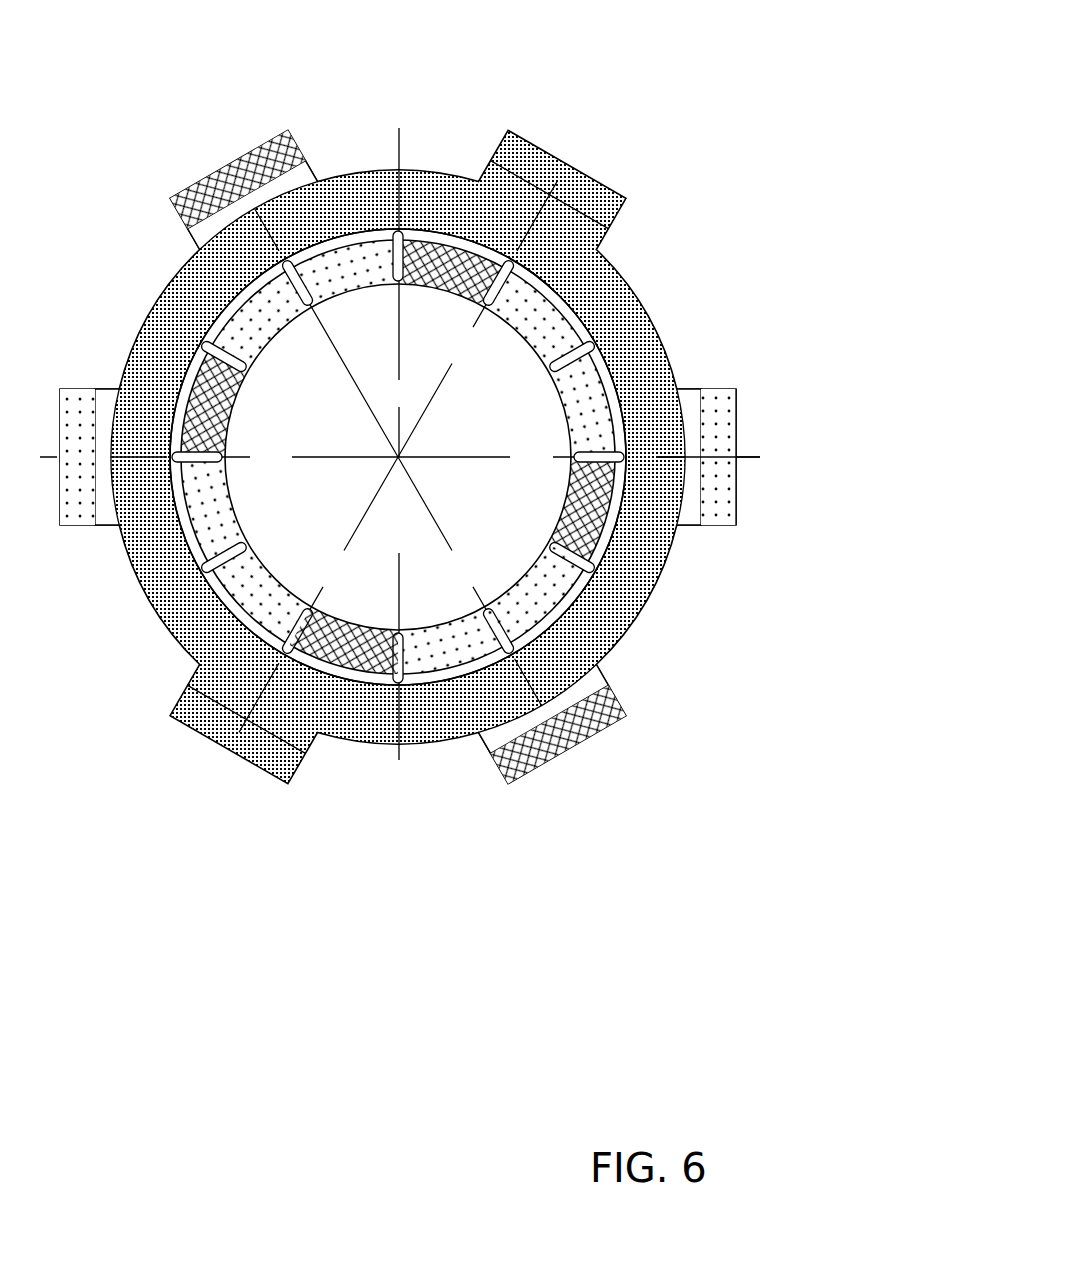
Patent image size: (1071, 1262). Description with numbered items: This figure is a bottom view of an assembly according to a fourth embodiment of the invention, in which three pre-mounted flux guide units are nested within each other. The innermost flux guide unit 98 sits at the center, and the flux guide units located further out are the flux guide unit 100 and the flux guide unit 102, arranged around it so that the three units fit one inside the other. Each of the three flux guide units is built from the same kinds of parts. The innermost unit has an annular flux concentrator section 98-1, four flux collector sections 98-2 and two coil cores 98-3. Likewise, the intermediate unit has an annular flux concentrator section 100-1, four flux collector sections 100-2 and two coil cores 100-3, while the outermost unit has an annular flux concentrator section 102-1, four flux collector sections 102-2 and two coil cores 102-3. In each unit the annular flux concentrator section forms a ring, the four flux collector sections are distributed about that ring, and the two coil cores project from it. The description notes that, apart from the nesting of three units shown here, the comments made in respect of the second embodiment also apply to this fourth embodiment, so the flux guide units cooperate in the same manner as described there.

The innermost flux guide unit 98 is at (437, 140).
The annular flux concentrator section 98-1 is at (621, 321).
The flux collector section 98-2 is at (588, 397).
The coil core 98-3 is at (598, 178).
The flux guide unit 100 is at (772, 497).
The annular flux concentrator section 100-1 is at (689, 507).
The flux collector section 100-2 is at (520, 593).
The coil core 100-3 is at (723, 428).
The flux guide unit 102 is at (215, 145).
The annular flux concentrator section 102-1 is at (600, 670).
The flux collector section 102-2 is at (335, 638).
The coil core 102-3 is at (610, 723).